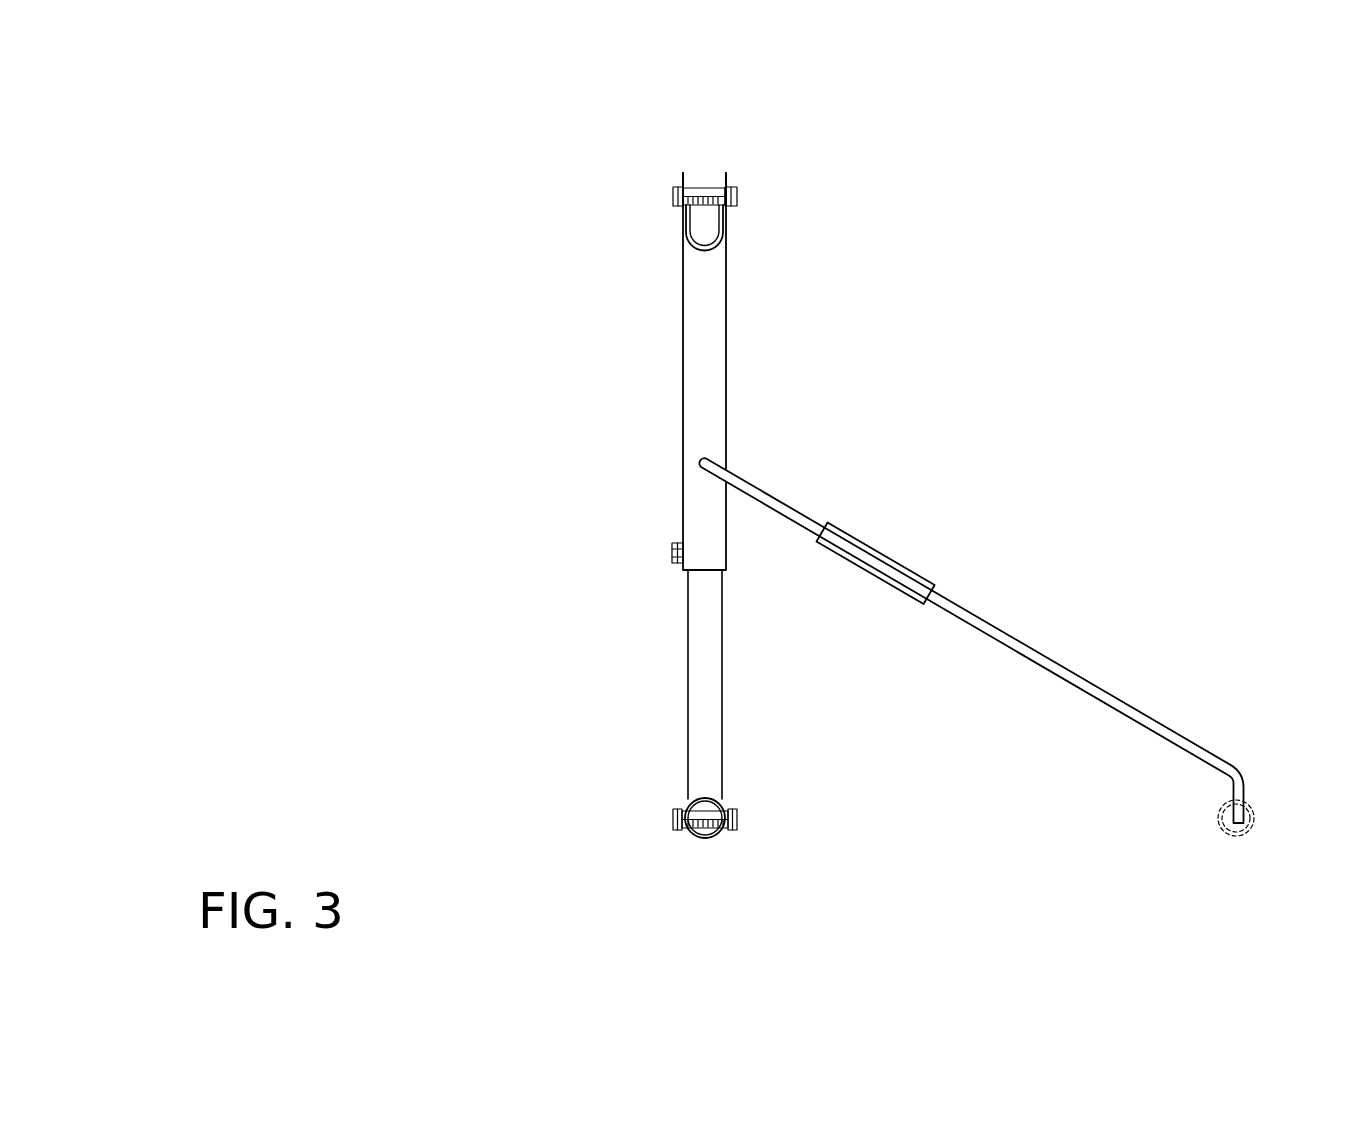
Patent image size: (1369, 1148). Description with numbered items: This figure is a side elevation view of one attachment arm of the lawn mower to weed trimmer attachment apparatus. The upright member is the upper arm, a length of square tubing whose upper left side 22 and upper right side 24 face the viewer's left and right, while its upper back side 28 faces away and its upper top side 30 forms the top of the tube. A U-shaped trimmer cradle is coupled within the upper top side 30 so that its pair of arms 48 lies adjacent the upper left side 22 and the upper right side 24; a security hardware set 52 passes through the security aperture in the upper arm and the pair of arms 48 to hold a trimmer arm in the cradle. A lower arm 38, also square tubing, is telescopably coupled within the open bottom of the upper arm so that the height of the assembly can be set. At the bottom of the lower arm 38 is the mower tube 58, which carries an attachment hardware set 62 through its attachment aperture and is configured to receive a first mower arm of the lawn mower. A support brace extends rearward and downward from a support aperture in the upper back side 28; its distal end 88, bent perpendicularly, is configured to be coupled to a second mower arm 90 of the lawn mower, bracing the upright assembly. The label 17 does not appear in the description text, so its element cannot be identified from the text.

The support arm assembly 17 is at (725, 353).
The upper left side 22 is at (687, 385).
The upper right side 24 is at (725, 417).
The upper back side 28 is at (713, 288).
The upper top side 30 is at (705, 255).
The lower arm 38 is at (715, 687).
The pair of arms 48 is at (723, 176).
The security hardware set 52 is at (702, 193).
The mower tube 58 is at (717, 852).
The attachment hardware set 62 is at (708, 818).
The distal end 88 is at (1238, 823).
The second mower arm 90 is at (1253, 817).